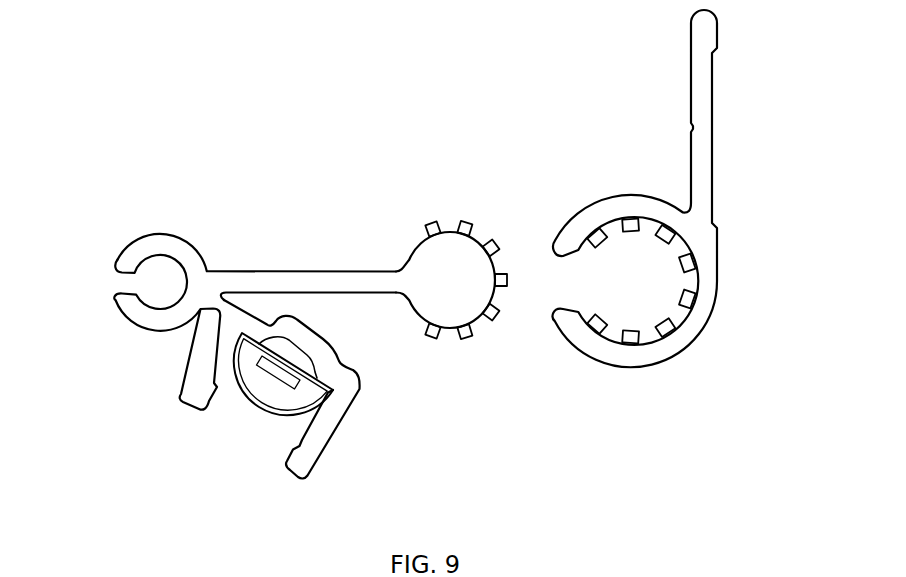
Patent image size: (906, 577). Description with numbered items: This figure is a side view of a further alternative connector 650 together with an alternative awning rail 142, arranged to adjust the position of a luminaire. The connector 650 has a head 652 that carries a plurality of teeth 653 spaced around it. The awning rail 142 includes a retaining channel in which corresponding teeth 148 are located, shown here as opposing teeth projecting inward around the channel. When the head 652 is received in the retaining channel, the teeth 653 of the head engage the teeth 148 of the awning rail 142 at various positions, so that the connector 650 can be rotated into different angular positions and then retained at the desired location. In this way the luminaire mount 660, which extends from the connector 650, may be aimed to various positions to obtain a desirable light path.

The awning rail 142 is at (735, 117).
The teeth 148 is at (679, 300).
The connector 650 is at (98, 285).
The head 652 is at (411, 251).
The teeth 653 is at (494, 244).
The luminaire mount 660 is at (349, 438).